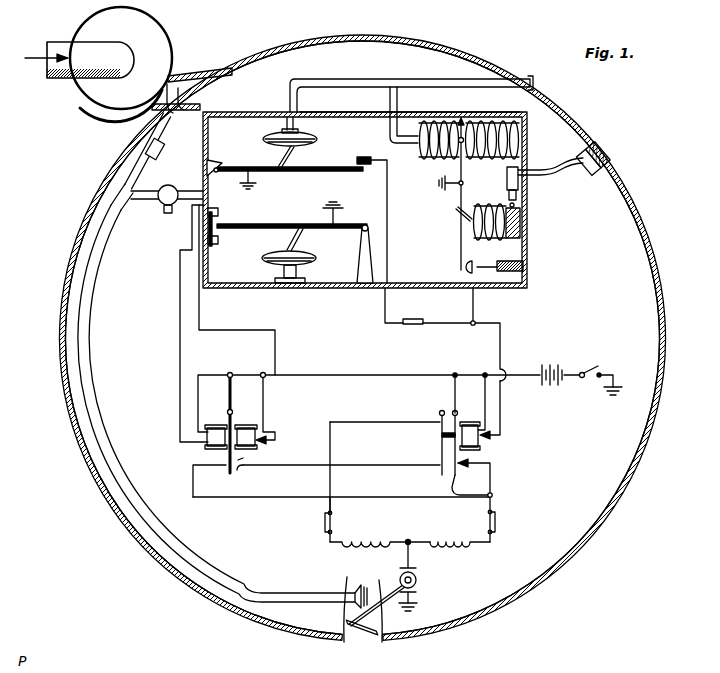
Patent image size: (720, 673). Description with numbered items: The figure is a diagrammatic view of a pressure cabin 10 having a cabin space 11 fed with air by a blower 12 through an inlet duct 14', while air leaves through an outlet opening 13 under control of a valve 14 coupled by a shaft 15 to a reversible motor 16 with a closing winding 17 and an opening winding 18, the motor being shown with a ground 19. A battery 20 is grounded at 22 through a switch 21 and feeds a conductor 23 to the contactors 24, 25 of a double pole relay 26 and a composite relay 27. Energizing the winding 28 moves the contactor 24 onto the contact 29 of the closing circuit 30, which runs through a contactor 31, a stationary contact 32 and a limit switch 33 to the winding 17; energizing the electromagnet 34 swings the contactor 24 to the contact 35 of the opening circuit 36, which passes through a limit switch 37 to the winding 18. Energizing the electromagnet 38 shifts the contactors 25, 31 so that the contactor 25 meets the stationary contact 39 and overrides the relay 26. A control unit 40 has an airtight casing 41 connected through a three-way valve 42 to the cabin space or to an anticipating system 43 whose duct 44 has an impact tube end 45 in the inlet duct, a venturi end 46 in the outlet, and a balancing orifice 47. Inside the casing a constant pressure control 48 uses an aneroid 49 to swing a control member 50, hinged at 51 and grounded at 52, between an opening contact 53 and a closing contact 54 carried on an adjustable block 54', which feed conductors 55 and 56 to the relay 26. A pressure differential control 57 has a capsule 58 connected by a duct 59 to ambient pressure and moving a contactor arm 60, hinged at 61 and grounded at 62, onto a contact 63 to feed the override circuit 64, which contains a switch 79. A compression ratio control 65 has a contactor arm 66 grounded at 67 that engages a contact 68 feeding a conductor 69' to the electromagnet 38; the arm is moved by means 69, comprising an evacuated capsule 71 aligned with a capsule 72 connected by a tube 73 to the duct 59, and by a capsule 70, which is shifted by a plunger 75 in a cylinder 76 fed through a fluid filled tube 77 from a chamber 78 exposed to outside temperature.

The pressure cabin 10 is at (645, 235).
The cabin space 11 is at (659, 305).
The blower 12 is at (156, 42).
The outlet opening 13 is at (345, 605).
The valve 14 is at (359, 643).
The inlet duct 14' is at (200, 60).
The shaft 15 is at (388, 605).
The reversible motor 16 is at (417, 582).
The closing winding 17 is at (380, 540).
The opening winding 18 is at (460, 548).
The ground 19 is at (418, 606).
The battery 20 is at (550, 364).
The switch 21 is at (590, 368).
The ground 22 is at (612, 400).
The conductor 23 is at (352, 375).
The contactor 24 is at (233, 418).
The contactor 25 is at (471, 485).
The double pole relay 26 is at (268, 436).
The composite relay 27 is at (502, 435).
The winding 28 is at (258, 453).
The contact 29 is at (243, 468).
The closing circuit 30 is at (380, 421).
The contactor 31 is at (440, 437).
The stationary contact 32 is at (436, 470).
The limit switch 33 is at (322, 523).
The electromagnet 34 is at (205, 450).
The contact 35 is at (222, 470).
The opening circuit 36 is at (329, 497).
The limit switch 37 is at (496, 522).
The electromagnet 38 is at (464, 424).
The stationary contact 39 is at (480, 462).
The control unit 40 is at (258, 112).
The casing 41 is at (352, 114).
The three-way valve 42 is at (170, 185).
The anticipating system 43 is at (110, 208).
The duct 44 is at (90, 308).
The impact tube end 45 is at (183, 100).
The venturi end 46 is at (350, 592).
The balancing orifice 47 is at (148, 146).
The constant pressure control element 48 is at (289, 245).
The aneroid 49 is at (312, 258).
The control member 50 is at (305, 222).
The hinge 51 is at (370, 228).
The ground 52 is at (342, 206).
The opening contact 53 is at (220, 241).
The closing contact 54 is at (230, 208).
The vertically adjustable block 54' is at (181, 229).
The conductor 55 is at (178, 344).
The conductor 56 is at (277, 330).
The pressure differential control 57 is at (318, 166).
The capsule 58 is at (265, 134).
The duct 59 is at (400, 79).
The contactor arm 60 is at (369, 150).
The hinge 61 is at (218, 162).
The ground 62 is at (255, 185).
The contact 63 is at (365, 156).
The override circuit 64 is at (384, 306).
The compression ratio control means 65 is at (450, 214).
The contactor arm 66 is at (458, 232).
The ground 67 is at (440, 183).
The contact 68 is at (466, 267).
The means 69 is at (484, 116).
The conductor 69' is at (491, 334).
The capsule 70 is at (505, 220).
The evacuated capsule 71 is at (520, 139).
The capsule 72 is at (446, 118).
The tube 73 is at (393, 145).
The plunger 75 is at (518, 188).
The cylinder 76 is at (506, 178).
The fluid filled tube 77 is at (560, 172).
The fluid filled chamber 78 is at (600, 152).
The switch 79 is at (413, 318).